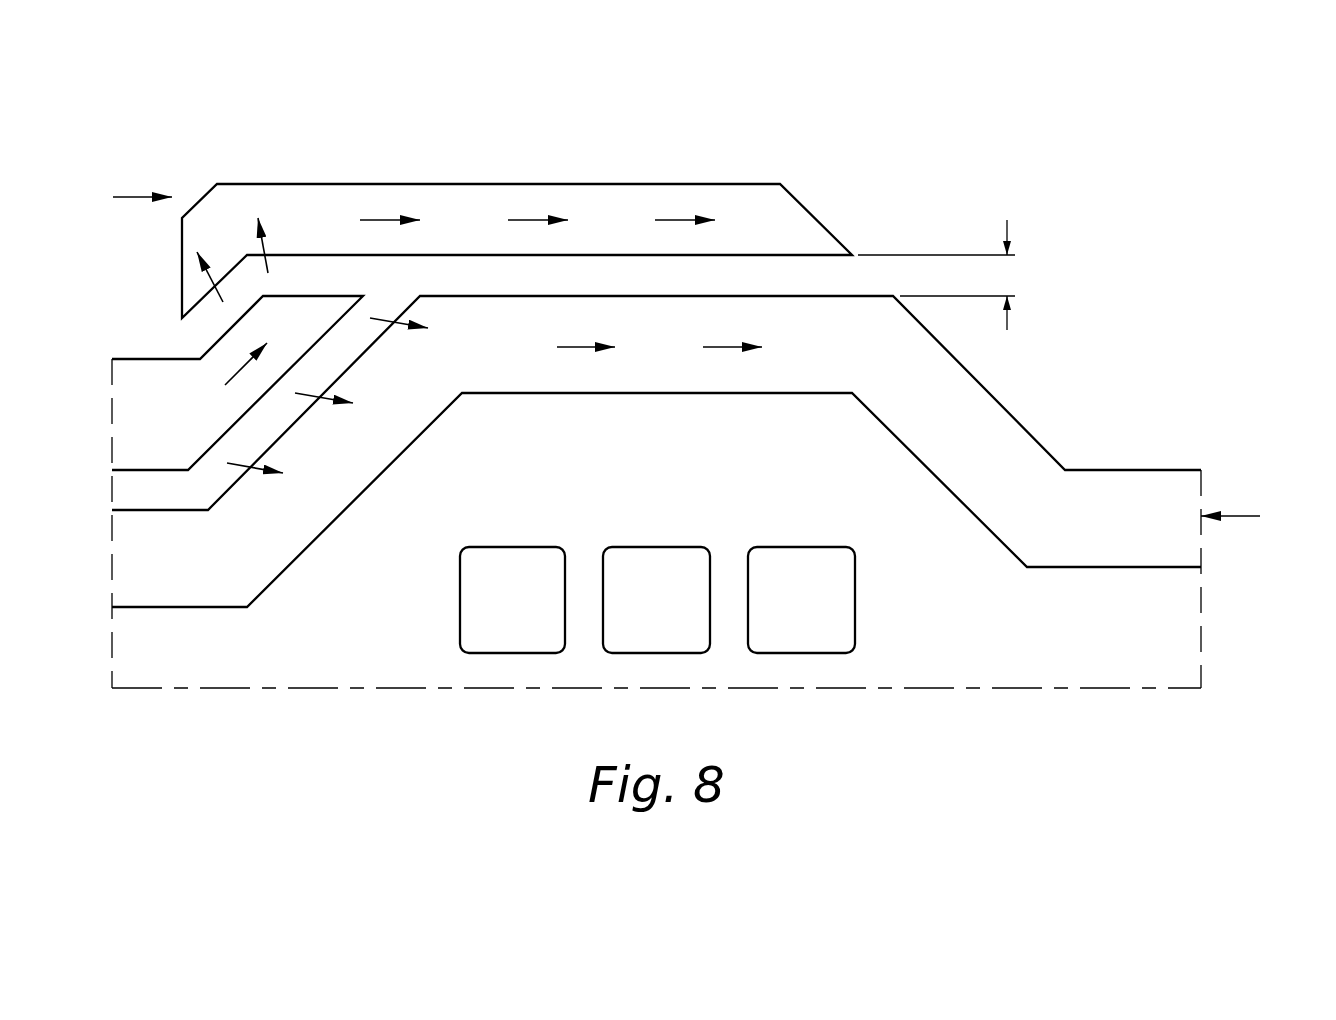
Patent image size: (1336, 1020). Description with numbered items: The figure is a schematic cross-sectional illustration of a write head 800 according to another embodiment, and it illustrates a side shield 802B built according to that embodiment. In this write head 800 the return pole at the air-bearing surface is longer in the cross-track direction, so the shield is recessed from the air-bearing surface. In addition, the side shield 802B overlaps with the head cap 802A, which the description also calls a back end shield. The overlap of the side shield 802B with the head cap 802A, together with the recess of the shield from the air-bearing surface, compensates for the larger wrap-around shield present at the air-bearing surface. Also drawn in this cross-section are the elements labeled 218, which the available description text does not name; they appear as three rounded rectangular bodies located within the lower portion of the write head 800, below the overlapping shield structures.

The write head 800 is at (227, 92).
The head cap 802A is at (140, 358).
The side shield 802B is at (525, 184).
The write coils 218 is at (653, 557).